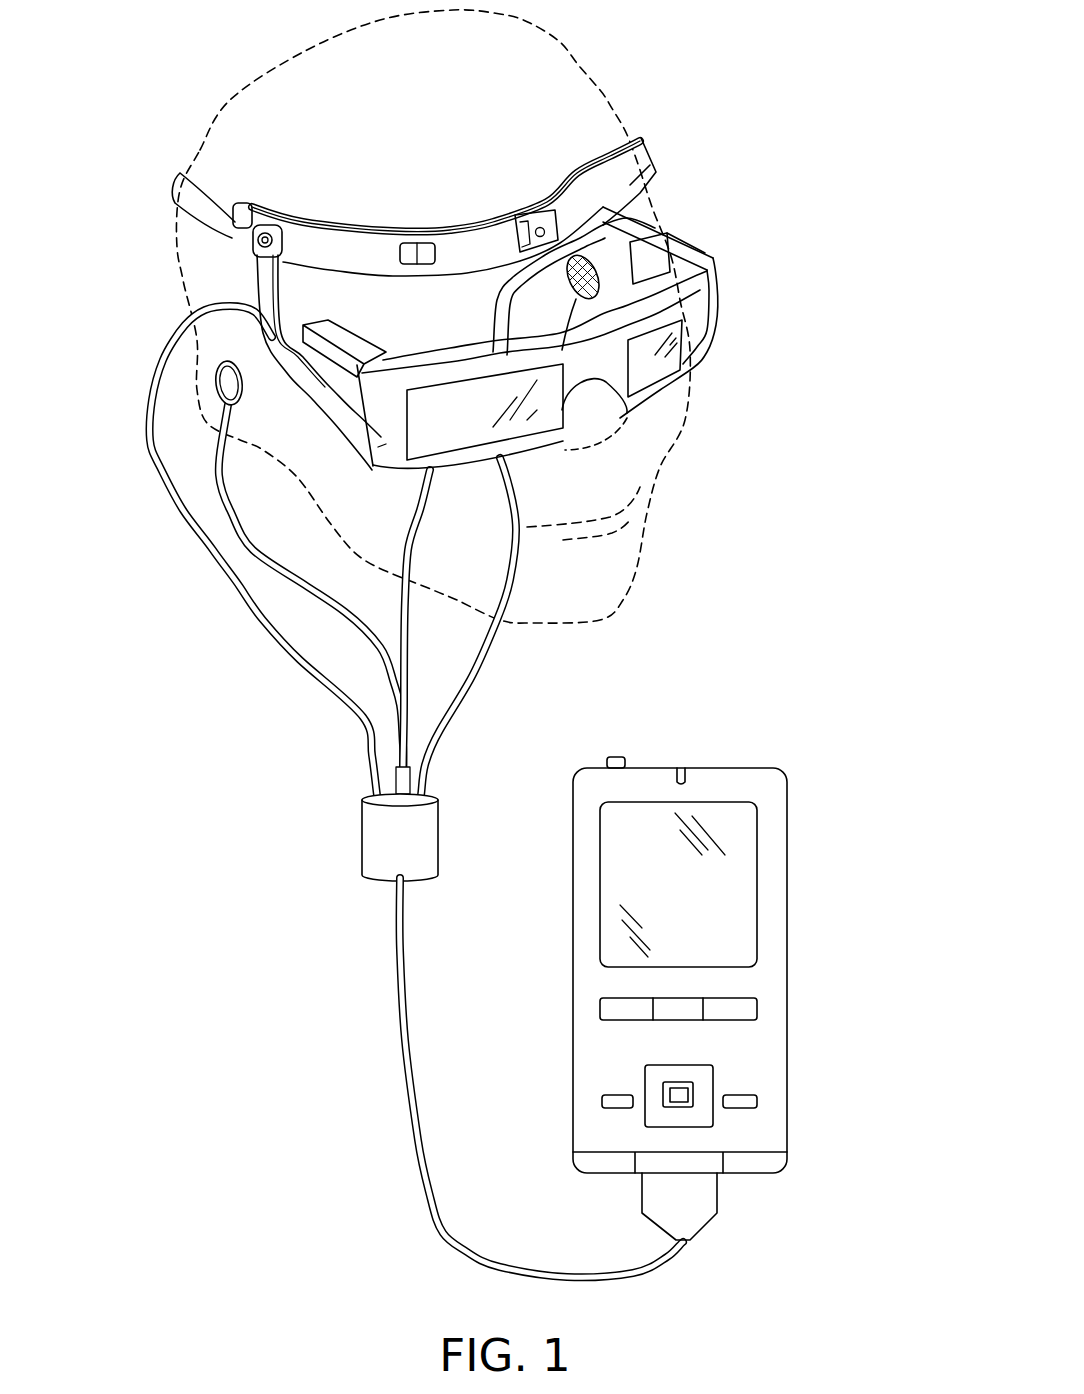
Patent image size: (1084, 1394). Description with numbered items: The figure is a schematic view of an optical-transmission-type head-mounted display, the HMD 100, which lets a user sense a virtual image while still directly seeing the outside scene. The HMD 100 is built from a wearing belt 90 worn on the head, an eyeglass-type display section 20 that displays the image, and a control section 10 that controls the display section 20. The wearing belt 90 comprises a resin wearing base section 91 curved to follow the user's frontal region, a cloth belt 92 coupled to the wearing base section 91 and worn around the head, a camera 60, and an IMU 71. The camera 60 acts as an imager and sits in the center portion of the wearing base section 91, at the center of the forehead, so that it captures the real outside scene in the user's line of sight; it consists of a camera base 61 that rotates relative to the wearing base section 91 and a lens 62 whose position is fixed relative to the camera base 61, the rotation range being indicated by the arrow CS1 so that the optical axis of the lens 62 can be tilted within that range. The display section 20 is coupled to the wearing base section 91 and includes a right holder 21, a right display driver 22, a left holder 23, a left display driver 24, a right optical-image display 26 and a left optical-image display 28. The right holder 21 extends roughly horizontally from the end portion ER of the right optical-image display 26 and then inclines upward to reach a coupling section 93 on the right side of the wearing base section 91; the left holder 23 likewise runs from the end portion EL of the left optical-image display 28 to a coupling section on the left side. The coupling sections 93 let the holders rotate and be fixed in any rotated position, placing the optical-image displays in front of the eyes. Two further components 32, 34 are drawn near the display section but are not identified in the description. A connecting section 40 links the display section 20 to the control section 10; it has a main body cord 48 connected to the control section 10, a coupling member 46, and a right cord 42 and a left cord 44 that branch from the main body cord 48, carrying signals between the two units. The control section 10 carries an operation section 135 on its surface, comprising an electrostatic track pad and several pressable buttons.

The HMD 100 is at (804, 50).
The control section 10 is at (714, 964).
The display section 20 is at (729, 248).
The right holder 21 is at (305, 412).
The right display driver 22 is at (343, 340).
The left holder 23 is at (699, 233).
The left display driver 24 is at (655, 205).
The right optical-image display 26 is at (462, 443).
The left optical-image display 28 is at (706, 363).
The right earphone 32 is at (220, 384).
The left earphone 34 is at (570, 277).
The connecting section 40 is at (416, 791).
The right cord 42 is at (257, 610).
The left cord 44 is at (475, 645).
The coupling member 46 is at (428, 835).
The main body cord 48 is at (400, 1040).
The camera 60 is at (513, 190).
The camera base 61 is at (518, 237).
The lens 62 is at (525, 203).
The IMU 71 is at (413, 240).
The wearing belt 90 is at (422, 159).
The wearing base section 91 is at (614, 200).
The belt 92 is at (188, 172).
The coupling section 93 is at (256, 239).
The operation section 135 is at (757, 987).
The arrow CS1 is at (573, 219).
The end portion EL is at (718, 298).
The end portion ER is at (373, 462).